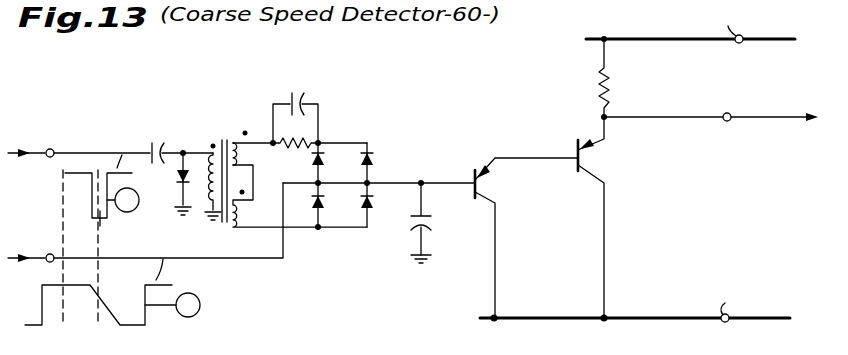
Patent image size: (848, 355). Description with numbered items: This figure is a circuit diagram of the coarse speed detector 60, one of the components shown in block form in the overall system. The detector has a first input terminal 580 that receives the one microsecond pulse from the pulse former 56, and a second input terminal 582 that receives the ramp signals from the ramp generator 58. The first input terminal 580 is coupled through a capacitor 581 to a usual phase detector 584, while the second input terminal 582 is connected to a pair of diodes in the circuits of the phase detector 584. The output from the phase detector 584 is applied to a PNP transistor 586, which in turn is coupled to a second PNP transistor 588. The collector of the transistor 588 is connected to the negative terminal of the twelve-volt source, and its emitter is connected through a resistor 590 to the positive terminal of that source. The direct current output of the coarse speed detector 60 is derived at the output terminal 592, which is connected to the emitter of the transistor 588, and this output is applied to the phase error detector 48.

The coarse speed detector 60 is at (411, 182).
The pulse former 56 is at (22, 148).
The ramp generator 58 is at (22, 262).
The phase error detector 48 is at (800, 121).
The first input terminal 580 is at (55, 151).
The capacitor 581 is at (161, 150).
The second input terminal 582 is at (55, 256).
The phase detector 584 is at (346, 165).
The PNP transistor 586 is at (473, 173).
The PNP transistor 588 is at (578, 170).
The resistor 590 is at (606, 100).
The output terminal 592 is at (725, 121).